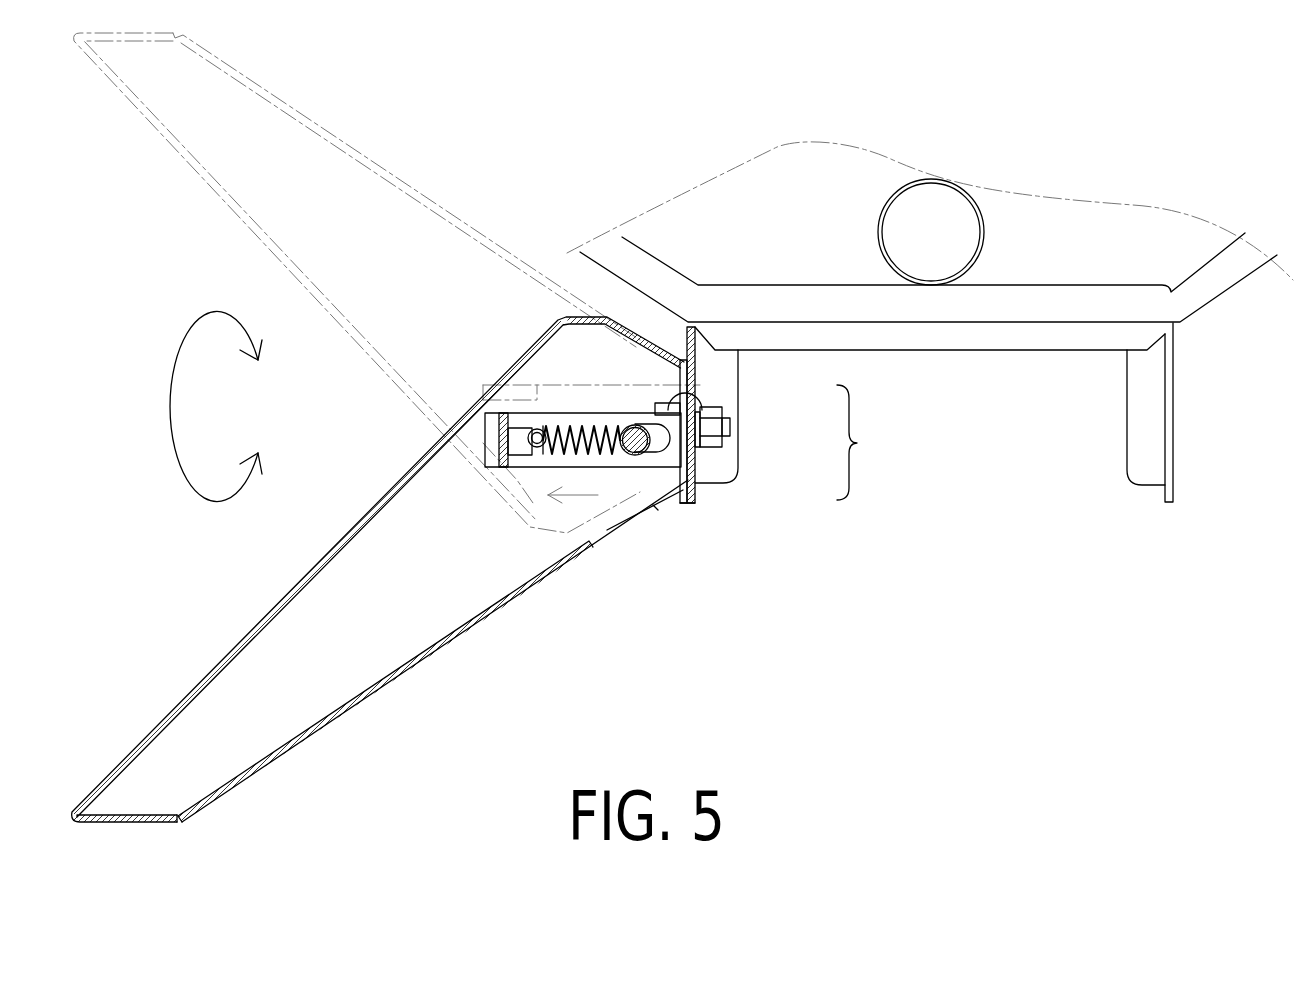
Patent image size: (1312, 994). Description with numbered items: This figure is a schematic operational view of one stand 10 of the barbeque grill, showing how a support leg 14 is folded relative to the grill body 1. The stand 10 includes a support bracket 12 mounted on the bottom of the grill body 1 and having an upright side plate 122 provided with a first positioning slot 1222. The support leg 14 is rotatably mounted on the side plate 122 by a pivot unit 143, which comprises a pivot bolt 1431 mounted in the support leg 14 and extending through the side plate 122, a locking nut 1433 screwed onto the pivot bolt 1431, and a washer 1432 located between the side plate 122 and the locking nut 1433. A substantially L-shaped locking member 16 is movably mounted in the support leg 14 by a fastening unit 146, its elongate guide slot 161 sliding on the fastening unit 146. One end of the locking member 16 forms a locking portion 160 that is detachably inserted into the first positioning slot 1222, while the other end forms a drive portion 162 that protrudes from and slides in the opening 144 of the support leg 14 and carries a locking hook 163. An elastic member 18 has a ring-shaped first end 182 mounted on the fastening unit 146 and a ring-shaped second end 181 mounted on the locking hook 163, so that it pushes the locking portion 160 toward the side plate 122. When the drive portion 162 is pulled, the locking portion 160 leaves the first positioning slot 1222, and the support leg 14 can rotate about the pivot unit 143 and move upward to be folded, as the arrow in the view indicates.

The grill body 1 is at (760, 187).
The stand 10 is at (320, 355).
The support bracket 12 is at (973, 340).
The side plate 122 is at (722, 372).
The first positioning slot 1222 is at (690, 493).
The support leg 14 is at (378, 498).
The pivot unit 143 is at (872, 442).
The pivot bolt 1431 is at (700, 392).
The washer 1432 is at (697, 460).
The locking nut 1433 is at (707, 428).
The opening 144 is at (492, 432).
The fastening unit 146 is at (630, 418).
The locking member 16 is at (583, 468).
The locking portion 160 is at (680, 362).
The elongate guide slot 161 is at (660, 452).
The drive portion 162 is at (514, 430).
The locking hook 163 is at (538, 418).
The elastic member 18 is at (608, 462).
The ring-shaped second end 181 is at (543, 428).
The ring-shaped first end 182 is at (636, 453).